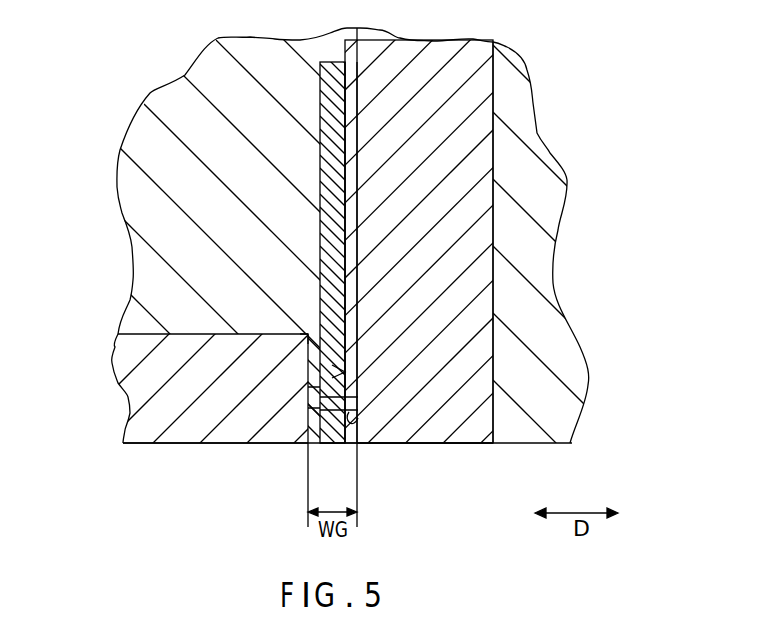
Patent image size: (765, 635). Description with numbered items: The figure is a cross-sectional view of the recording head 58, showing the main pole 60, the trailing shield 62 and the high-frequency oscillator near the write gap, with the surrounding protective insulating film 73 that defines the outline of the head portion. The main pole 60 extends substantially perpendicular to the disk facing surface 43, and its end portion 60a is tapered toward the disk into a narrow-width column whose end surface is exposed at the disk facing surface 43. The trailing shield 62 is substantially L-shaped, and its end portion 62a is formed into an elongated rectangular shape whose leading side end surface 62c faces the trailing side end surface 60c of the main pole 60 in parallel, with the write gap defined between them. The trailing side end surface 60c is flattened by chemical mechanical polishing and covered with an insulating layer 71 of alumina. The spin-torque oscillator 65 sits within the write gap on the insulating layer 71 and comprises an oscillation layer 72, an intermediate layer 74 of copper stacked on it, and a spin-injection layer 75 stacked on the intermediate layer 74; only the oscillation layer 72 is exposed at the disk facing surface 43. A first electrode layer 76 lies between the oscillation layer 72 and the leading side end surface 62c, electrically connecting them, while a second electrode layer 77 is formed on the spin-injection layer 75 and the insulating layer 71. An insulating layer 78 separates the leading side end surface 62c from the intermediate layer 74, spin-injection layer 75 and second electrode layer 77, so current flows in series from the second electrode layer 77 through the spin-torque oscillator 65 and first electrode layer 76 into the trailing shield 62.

The recording head 58 is at (110, 174).
The protective insulating film 73 is at (170, 100).
The trailing shield 62 is at (160, 334).
The second electrode layer 77 is at (325, 179).
The main pole 60 is at (473, 162).
The insulating layer 71 is at (357, 238).
The disk facing surface 43 is at (548, 445).
The insulating layer 78 is at (313, 337).
The spin-injection layer 75 is at (357, 375).
The intermediate layer 74 is at (347, 403).
The end portion of trailing shield 62a is at (181, 433).
The spin-torque oscillator 65 is at (292, 396).
The leading side end surface 62c is at (310, 420).
The first electrode layer 76 is at (312, 443).
The oscillation layer 72 is at (333, 443).
The trailing side end surface 60c is at (372, 445).
The end portion of main pole 60a is at (461, 427).